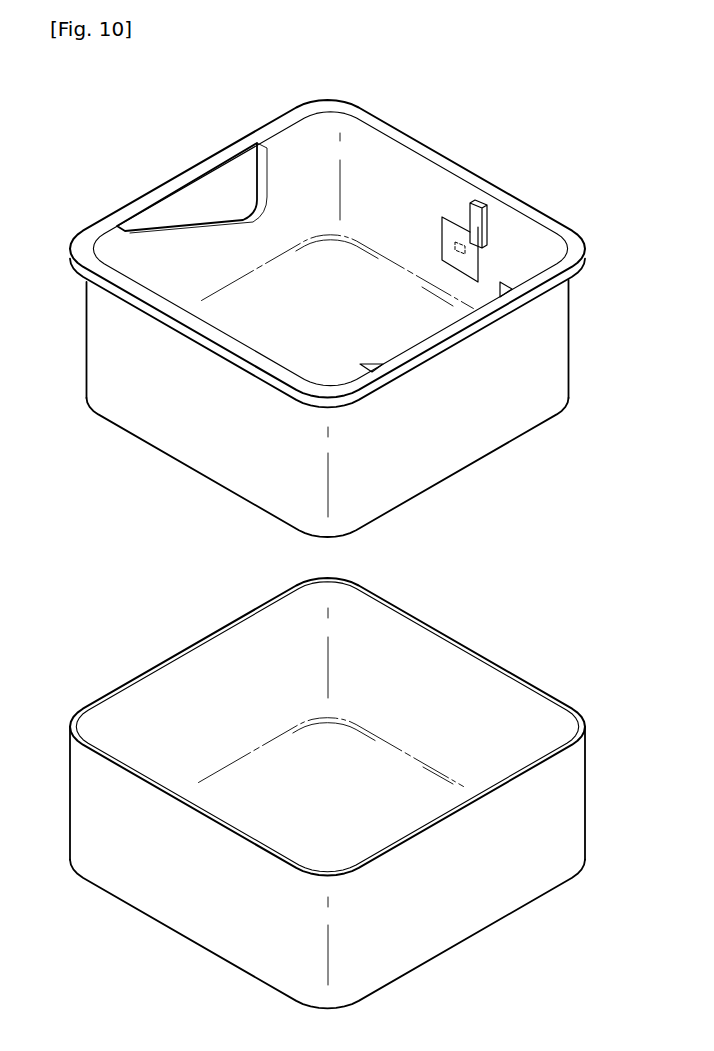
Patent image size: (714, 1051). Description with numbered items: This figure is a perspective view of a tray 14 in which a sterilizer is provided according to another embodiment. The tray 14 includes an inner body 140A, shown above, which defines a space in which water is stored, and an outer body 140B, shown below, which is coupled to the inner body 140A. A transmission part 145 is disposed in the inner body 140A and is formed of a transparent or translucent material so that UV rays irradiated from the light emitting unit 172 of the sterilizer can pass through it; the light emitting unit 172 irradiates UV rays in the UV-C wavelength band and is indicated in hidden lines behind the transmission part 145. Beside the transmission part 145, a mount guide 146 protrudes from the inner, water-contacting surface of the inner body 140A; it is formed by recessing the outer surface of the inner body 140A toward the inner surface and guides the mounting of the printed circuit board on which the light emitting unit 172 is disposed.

The tray 14 is at (207, 144).
The inner body 140A is at (303, 150).
The outer body 140B is at (450, 930).
The transmission part 145 is at (464, 266).
The mount guide 146 is at (481, 222).
The light emitting unit 172 is at (466, 250).